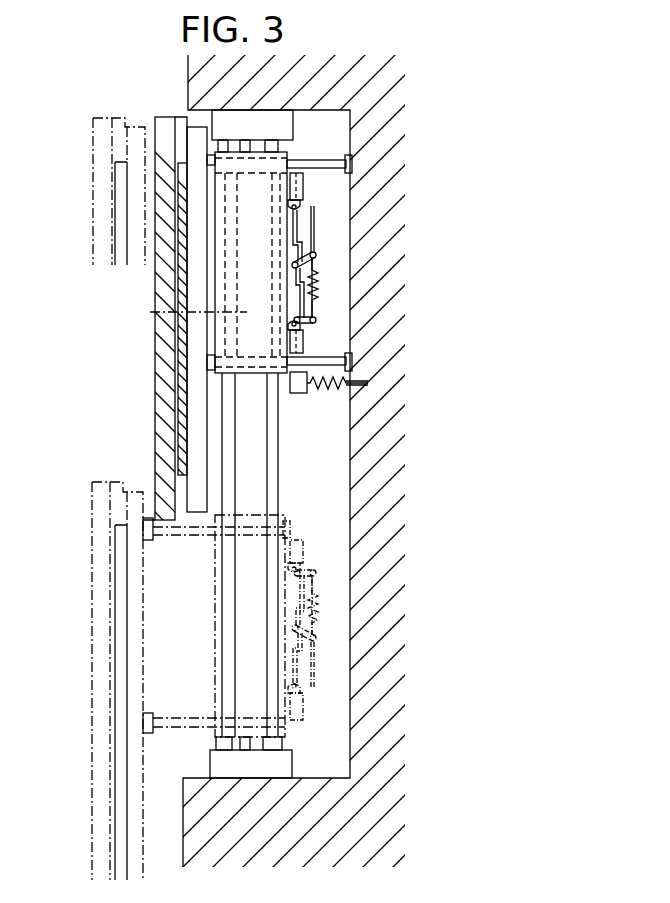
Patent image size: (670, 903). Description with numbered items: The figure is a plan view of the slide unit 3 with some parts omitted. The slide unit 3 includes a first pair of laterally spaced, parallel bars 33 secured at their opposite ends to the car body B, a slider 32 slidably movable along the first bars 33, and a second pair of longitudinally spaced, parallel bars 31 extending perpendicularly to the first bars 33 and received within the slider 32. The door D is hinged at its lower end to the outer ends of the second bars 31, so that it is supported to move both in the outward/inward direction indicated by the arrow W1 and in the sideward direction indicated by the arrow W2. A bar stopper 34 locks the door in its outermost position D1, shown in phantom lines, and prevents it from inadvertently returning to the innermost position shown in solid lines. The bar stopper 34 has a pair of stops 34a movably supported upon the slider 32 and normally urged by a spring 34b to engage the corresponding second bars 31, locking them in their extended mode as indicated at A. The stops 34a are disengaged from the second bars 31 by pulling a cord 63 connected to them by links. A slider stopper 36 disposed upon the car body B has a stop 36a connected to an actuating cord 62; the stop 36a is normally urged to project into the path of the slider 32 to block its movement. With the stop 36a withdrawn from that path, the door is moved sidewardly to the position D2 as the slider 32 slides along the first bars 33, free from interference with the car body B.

The slide unit 3 is at (430, 291).
The second bars 31 is at (332, 166).
The slider 32 is at (248, 300).
The first bars 33 is at (233, 488).
The bar stopper 34 is at (358, 267).
The stops 34a is at (307, 177).
The spring 34b is at (318, 297).
The slider stopper 36 is at (285, 395).
The stop 36a is at (312, 393).
The actuating cord 62 is at (358, 386).
The cord 63 is at (316, 231).
The door D is at (155, 366).
The outermost position D1 is at (93, 240).
The sideward position D2 is at (92, 728).
The outward/inward direction arrow W1 is at (150, 102).
The sideward direction arrow W2 is at (73, 527).
The extended mode A is at (326, 722).
The car body B is at (313, 835).